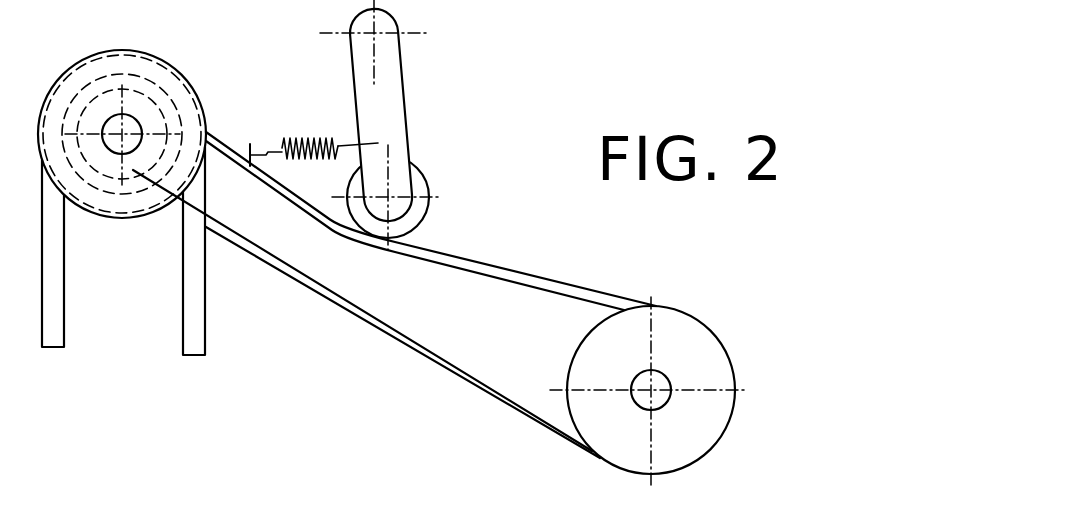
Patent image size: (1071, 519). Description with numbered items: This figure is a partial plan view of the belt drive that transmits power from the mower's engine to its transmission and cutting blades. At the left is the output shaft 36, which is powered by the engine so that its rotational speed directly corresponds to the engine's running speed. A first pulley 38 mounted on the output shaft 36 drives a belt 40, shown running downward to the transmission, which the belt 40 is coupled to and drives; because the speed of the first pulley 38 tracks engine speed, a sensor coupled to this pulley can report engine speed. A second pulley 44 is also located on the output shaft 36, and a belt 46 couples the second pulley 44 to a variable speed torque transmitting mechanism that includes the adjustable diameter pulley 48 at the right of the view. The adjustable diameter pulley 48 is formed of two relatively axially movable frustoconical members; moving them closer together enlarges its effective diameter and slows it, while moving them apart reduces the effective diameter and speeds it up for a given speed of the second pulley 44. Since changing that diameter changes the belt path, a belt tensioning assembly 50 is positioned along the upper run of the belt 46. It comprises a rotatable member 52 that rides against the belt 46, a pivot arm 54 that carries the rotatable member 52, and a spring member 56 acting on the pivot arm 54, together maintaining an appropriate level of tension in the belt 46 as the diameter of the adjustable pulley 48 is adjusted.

The output shaft 36 is at (132, 114).
The first pulley 38 is at (81, 59).
The belt 40 is at (60, 288).
The second pulley 44 is at (88, 182).
The belt 46 is at (347, 303).
The adjustable diameter pulley 48 is at (733, 353).
The belt tensioning assembly 50 is at (387, 125).
The rotatable member 52 is at (424, 180).
The pivot arm 54 is at (365, 85).
The spring member 56 is at (298, 140).